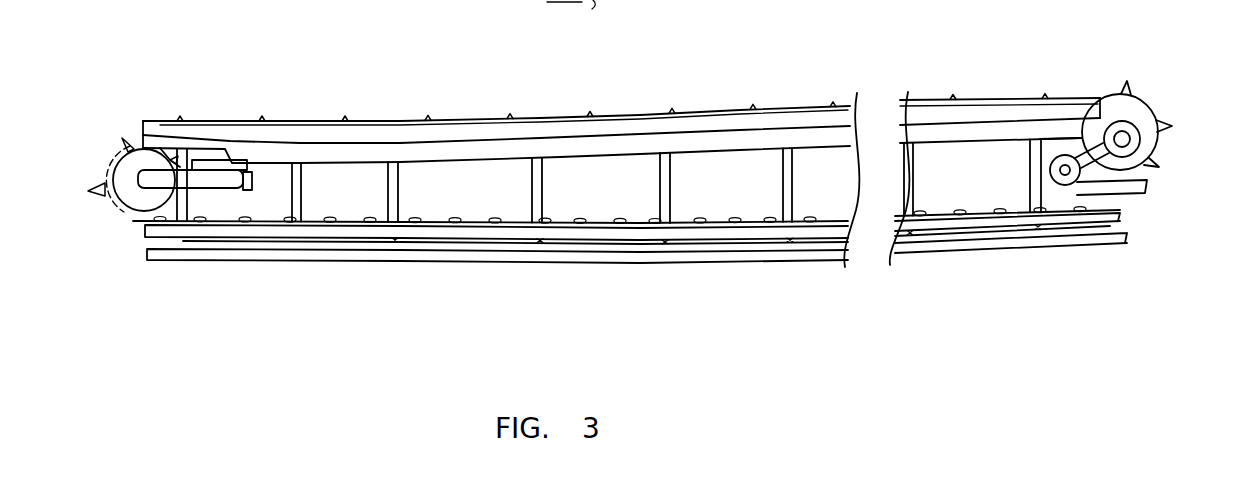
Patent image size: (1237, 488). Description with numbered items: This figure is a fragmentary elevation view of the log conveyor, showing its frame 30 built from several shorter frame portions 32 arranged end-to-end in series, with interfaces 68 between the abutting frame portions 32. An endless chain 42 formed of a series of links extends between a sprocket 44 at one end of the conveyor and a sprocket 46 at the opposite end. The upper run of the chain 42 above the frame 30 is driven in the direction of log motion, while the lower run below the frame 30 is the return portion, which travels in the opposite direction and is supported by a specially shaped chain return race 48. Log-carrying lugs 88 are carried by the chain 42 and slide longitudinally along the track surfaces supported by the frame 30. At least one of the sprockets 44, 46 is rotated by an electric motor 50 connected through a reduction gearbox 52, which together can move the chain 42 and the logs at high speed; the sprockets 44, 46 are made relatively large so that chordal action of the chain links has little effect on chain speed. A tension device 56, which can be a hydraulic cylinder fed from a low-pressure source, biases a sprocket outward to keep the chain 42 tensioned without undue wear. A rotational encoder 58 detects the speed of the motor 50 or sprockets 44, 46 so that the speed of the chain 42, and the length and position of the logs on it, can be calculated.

The frame 30 is at (365, 151).
The frame portions 32 is at (325, 120).
The chain 42 is at (485, 228).
The sprocket 44 is at (1143, 94).
The sprocket 46 is at (118, 150).
The chain return race 48 is at (262, 251).
The electric motor 50 is at (1068, 178).
The reduction gearbox 52 is at (1148, 108).
The tension device 56 is at (221, 160).
The rotational encoder 58 is at (1064, 176).
The interfaces 68 is at (440, 137).
The log-carrying lugs 88 is at (96, 197).